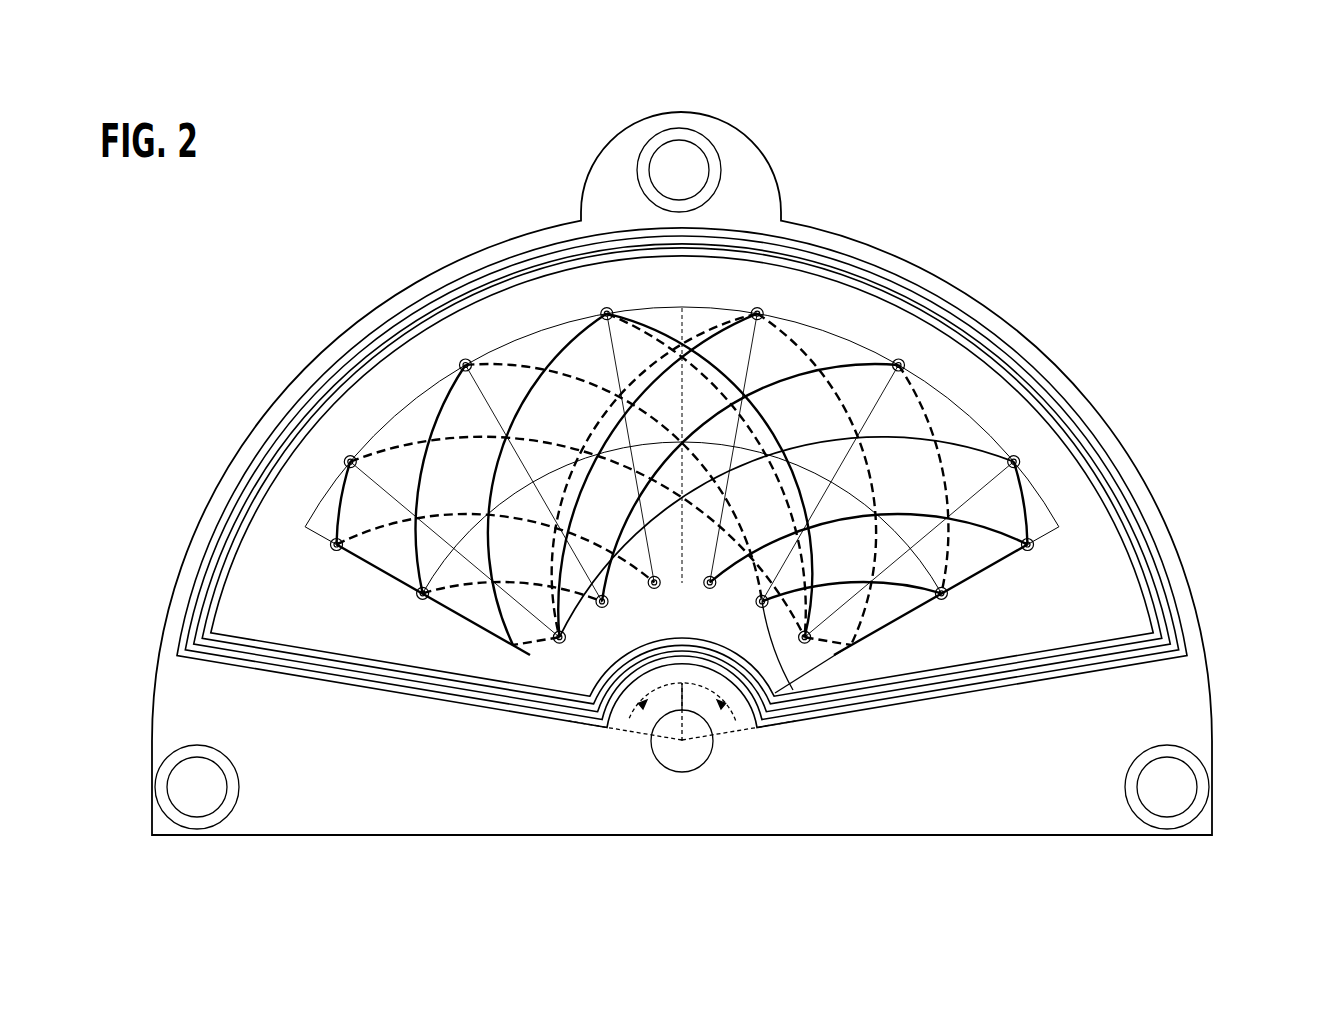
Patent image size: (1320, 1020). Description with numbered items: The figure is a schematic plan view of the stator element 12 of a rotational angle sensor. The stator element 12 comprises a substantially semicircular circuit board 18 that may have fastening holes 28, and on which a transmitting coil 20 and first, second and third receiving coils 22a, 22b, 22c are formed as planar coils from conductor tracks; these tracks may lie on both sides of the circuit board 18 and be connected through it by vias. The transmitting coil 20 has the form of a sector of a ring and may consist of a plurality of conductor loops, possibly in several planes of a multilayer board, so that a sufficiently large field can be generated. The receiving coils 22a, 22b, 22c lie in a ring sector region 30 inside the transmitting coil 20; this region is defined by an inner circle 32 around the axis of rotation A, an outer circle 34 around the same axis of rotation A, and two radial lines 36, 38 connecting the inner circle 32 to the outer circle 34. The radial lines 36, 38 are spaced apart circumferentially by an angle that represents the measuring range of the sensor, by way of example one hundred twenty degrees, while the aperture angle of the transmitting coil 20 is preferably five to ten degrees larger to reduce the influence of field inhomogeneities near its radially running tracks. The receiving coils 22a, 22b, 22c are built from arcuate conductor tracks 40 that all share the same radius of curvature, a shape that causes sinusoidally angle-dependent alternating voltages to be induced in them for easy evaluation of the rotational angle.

The stator element 12 is at (1230, 192).
The circuit board 18 is at (352, 800).
The transmitting coil 20 is at (712, 491).
The first receiving coil 22a is at (392, 447).
The second receiving coil 22b is at (422, 593).
The third receiving coil 22c is at (392, 447).
The fastening holes 28 is at (680, 170).
The ring sector region 30 is at (992, 318).
The inner circle 32 is at (803, 697).
The outer circle 34 is at (808, 320).
The radial line 36 is at (528, 657).
The radial line 38 is at (862, 693).
The arcuate conductor tracks 40 is at (555, 343).
The axis of rotation A is at (682, 772).